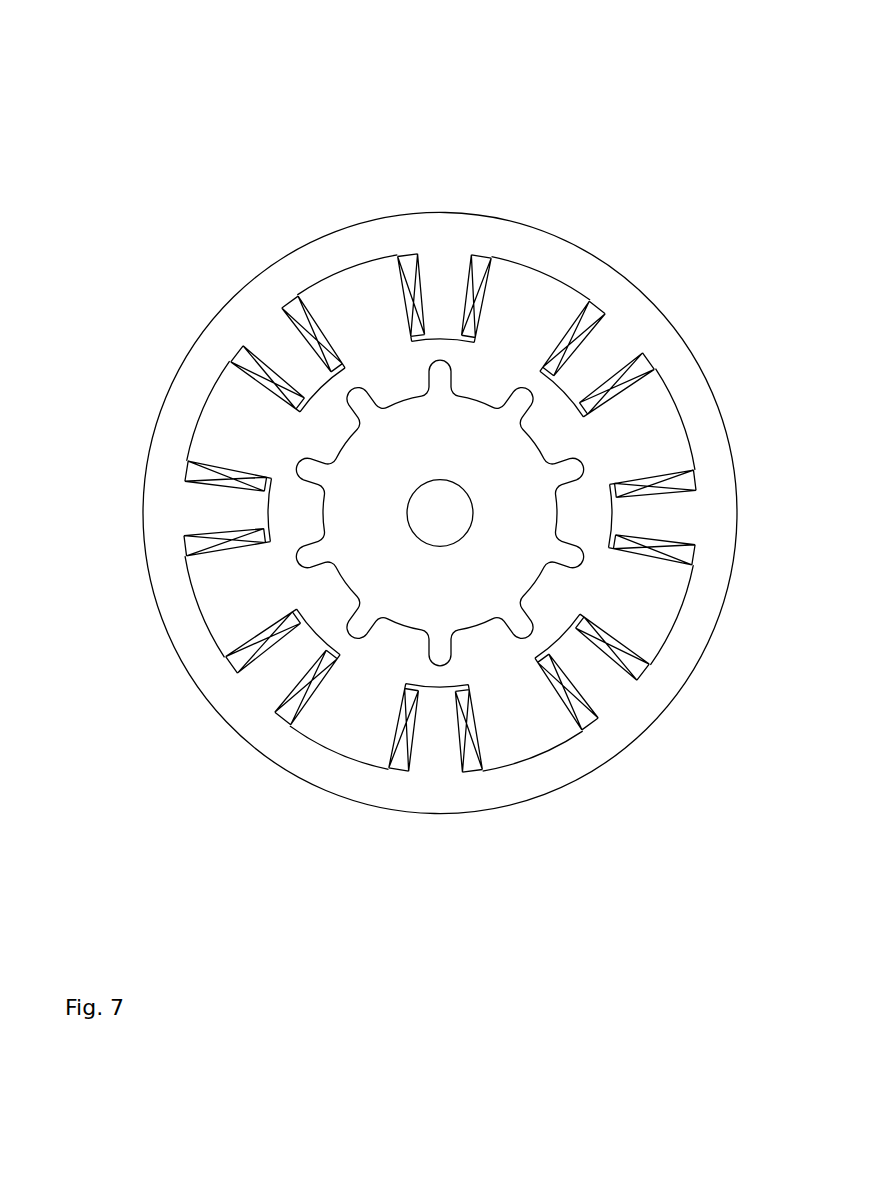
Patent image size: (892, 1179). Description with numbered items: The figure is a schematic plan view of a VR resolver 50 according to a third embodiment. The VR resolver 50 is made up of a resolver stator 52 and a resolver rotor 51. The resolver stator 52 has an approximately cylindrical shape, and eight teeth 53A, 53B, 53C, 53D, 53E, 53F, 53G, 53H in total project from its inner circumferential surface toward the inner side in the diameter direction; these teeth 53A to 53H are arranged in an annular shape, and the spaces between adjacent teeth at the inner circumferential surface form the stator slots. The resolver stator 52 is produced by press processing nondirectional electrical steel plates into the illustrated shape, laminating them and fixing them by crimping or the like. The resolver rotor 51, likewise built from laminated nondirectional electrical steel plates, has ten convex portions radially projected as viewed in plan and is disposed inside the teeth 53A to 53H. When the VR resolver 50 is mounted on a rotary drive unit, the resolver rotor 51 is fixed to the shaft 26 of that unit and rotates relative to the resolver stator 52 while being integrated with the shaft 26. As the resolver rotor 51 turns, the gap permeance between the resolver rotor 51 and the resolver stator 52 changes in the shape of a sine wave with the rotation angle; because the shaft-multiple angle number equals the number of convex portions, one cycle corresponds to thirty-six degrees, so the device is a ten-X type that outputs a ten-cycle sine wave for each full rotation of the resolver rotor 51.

The VR resolver 50 is at (212, 868).
The resolver rotor 51 is at (575, 456).
The resolver stator 52 is at (425, 174).
The tooth 53A is at (468, 292).
The tooth 53B is at (632, 378).
The tooth 53C is at (665, 548).
The tooth 53D is at (568, 705).
The tooth 53E is at (405, 687).
The tooth 53F is at (253, 642).
The tooth 53G is at (223, 480).
The tooth 53H is at (318, 338).
The shaft 26 is at (463, 536).